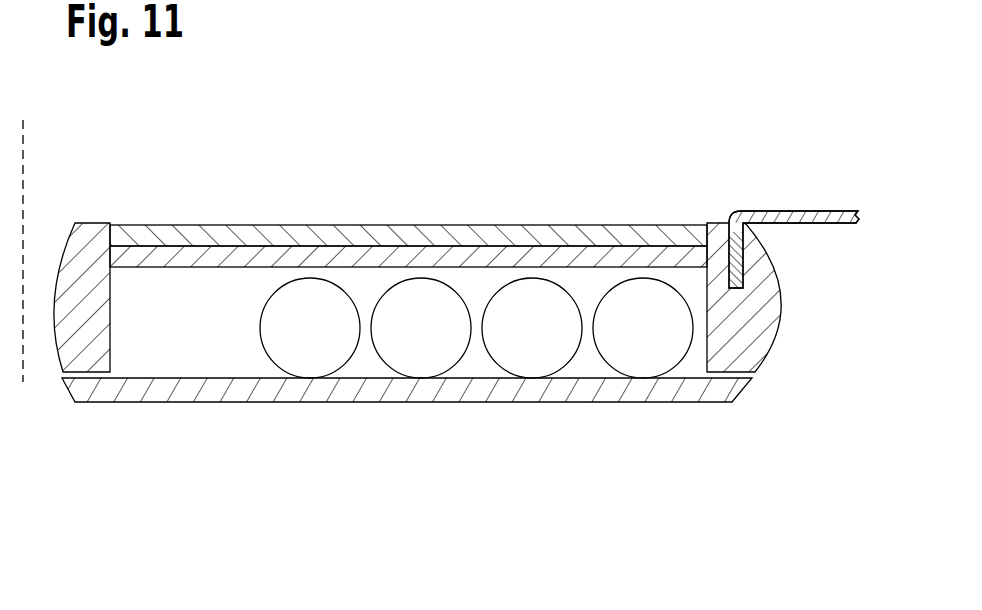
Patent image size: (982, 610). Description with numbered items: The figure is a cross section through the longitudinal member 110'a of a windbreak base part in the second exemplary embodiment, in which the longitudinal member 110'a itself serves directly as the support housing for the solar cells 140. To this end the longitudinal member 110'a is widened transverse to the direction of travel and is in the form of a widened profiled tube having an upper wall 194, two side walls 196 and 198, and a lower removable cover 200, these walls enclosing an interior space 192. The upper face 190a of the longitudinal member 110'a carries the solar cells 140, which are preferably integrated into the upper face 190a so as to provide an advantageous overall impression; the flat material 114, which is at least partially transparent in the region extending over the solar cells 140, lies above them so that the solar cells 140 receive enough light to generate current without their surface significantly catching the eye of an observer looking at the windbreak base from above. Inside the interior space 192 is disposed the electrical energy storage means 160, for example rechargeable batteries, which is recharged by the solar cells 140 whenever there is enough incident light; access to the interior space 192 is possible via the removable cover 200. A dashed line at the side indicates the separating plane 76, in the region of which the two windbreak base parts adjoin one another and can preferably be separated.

The separating plane 76 is at (25, 174).
The longitudinal member 110'a is at (462, 352).
The flat material 114 is at (802, 208).
The solar cells 140 is at (583, 240).
The electrical energy storage means 160 is at (405, 350).
The upper face 190a is at (408, 206).
The interior space 192 is at (476, 380).
The upper wall 194 is at (428, 257).
The side wall 196 is at (763, 333).
The side wall 198 is at (88, 362).
The removable cover 200 is at (642, 390).